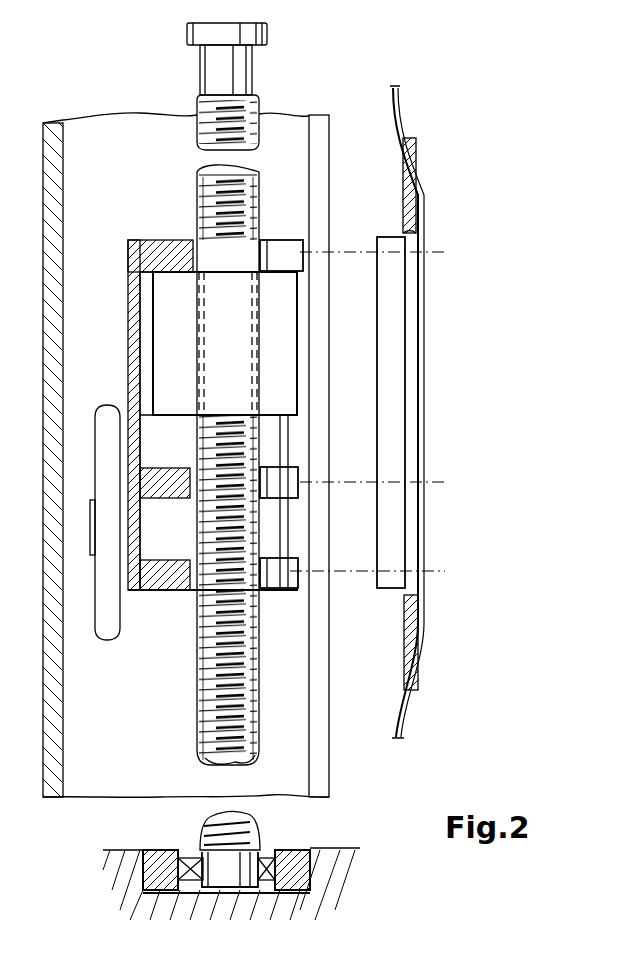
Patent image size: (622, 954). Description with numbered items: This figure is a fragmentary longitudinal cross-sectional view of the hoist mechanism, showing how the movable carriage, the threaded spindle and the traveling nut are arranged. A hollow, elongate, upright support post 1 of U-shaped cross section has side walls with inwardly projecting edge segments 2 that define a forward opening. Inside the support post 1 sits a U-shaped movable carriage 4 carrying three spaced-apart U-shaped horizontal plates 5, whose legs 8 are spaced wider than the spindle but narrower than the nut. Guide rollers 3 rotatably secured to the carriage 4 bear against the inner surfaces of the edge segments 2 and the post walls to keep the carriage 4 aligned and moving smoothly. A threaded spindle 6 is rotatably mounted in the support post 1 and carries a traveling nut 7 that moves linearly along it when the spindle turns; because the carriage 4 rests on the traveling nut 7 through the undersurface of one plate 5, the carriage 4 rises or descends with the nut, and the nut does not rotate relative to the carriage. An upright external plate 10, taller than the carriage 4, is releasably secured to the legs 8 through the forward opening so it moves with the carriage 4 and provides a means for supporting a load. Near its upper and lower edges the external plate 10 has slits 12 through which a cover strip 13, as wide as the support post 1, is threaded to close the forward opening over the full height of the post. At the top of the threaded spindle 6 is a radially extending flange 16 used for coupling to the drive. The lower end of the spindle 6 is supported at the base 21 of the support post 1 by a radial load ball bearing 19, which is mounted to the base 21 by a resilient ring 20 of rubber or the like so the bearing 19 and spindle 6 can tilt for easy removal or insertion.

The support post 1 is at (53, 753).
The edge segments 2 is at (325, 181).
The guide rollers 3 is at (108, 632).
The movable carriage 4 is at (130, 354).
The U-shaped horizontal plates 5 is at (163, 498).
The threaded spindle 6 is at (212, 694).
The traveling nut 7 is at (170, 325).
The legs 8 is at (296, 262).
The external plate 10 is at (405, 362).
The slits 12 is at (416, 170).
The cover strip 13 is at (399, 93).
The flange 16 is at (265, 33).
The radial load ball bearing 19 is at (262, 858).
The resilient ring 20 is at (300, 878).
The base 21 is at (132, 855).